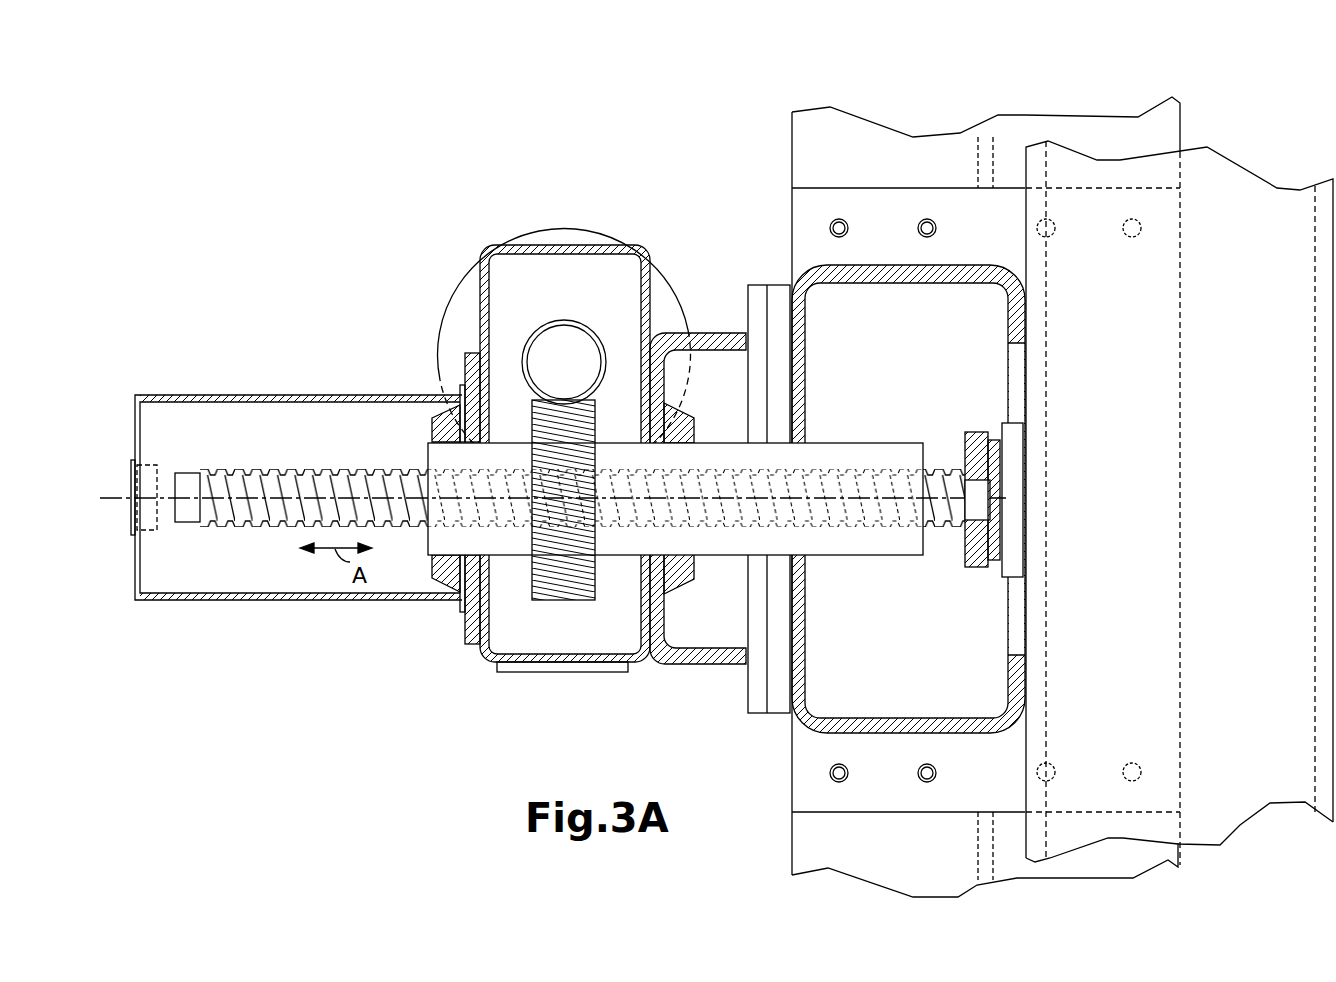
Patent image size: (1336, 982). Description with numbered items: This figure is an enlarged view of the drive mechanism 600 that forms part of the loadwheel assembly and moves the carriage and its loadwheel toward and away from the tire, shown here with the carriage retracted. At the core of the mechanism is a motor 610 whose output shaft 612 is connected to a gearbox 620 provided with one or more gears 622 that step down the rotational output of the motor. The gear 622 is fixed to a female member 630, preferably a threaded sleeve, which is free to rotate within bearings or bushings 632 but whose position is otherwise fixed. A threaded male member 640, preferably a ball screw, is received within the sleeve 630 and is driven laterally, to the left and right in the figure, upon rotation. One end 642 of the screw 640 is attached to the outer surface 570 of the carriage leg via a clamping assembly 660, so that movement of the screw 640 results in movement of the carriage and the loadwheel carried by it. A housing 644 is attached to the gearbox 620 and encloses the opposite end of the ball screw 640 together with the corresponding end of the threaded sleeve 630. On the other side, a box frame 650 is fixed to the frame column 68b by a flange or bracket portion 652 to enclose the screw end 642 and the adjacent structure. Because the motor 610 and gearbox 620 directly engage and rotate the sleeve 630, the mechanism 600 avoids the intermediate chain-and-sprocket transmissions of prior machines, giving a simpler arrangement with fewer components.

The drive mechanism 600 is at (480, 207).
The motor 610 is at (460, 320).
The output shaft 612 is at (563, 320).
The gearbox 620 is at (528, 665).
The gear 622 is at (565, 585).
The female member 630 is at (440, 540).
The bearings or bushings 632 is at (440, 412).
The threaded male member 640 is at (398, 468).
The end of screw 642 is at (955, 478).
The housing 644 is at (320, 600).
The box frame 650 is at (1005, 283).
The flange or bracket portion 652 is at (888, 240).
The clamping assembly 660 is at (968, 568).
The frame column 68b is at (937, 140).
The outer surface 570 is at (1025, 750).